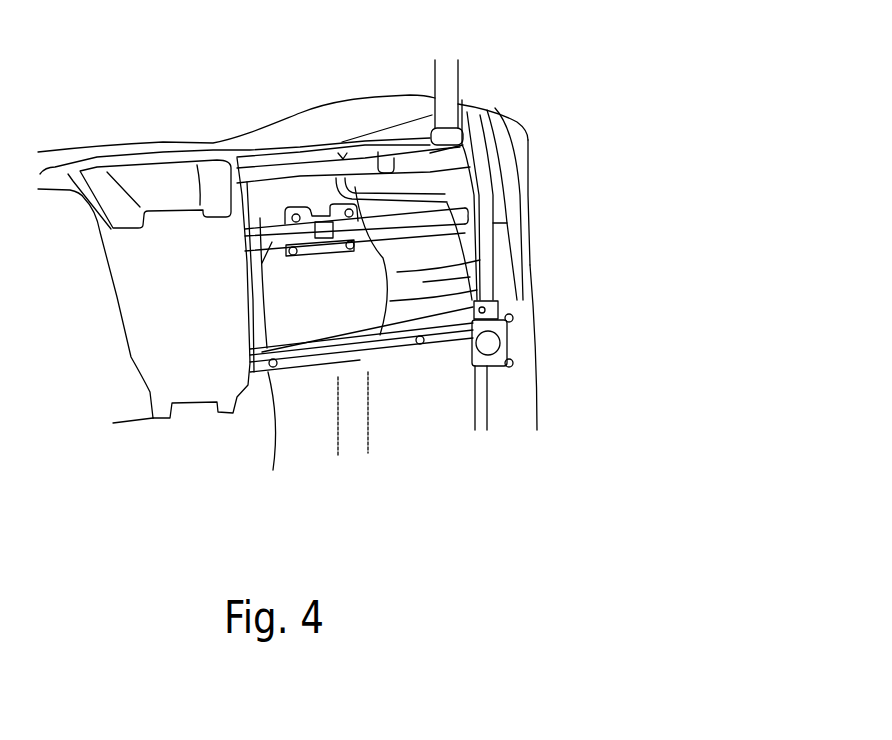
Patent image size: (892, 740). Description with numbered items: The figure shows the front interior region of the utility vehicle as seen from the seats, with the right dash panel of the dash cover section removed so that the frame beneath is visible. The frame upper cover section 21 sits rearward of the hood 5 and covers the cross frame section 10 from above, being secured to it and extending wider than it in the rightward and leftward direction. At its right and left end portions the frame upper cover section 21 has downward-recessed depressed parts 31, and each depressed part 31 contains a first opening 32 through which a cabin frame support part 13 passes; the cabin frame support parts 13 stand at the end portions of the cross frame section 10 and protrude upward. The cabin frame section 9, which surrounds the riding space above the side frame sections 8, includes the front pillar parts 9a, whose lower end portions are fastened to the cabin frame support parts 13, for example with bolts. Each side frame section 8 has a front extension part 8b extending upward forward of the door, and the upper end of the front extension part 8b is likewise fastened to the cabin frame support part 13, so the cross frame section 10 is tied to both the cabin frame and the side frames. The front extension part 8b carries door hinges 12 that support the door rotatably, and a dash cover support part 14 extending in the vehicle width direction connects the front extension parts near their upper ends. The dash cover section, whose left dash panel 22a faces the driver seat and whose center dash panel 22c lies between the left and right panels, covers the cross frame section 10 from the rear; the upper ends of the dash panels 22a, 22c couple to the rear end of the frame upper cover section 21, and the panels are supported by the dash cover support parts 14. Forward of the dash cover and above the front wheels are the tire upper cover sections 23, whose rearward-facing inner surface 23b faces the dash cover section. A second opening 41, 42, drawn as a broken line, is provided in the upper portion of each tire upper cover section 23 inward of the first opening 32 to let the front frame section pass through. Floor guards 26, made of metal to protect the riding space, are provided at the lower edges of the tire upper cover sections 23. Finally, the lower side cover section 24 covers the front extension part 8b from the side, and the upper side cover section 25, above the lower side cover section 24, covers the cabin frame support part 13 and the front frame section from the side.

The hood 5 is at (115, 140).
The frame upper cover section 21 is at (252, 157).
The cross frame section 10 is at (302, 157).
The second opening 41 is at (345, 137).
The depressed part 31 is at (405, 140).
The first opening 32 is at (425, 140).
The cabin frame section 9 is at (460, 70).
The front pillar part 9a is at (461, 80).
The cabin frame support part 13 is at (450, 141).
The upper side cover section 25 is at (530, 155).
The second opening 42 is at (450, 198).
The tire upper cover section 23 is at (517, 253).
The inner surface 23b is at (440, 285).
The door hinge 12 is at (503, 333).
The lower side cover section 24 is at (537, 347).
The side frame section 8 is at (480, 390).
The front extension part 8b is at (486, 410).
The left dash panel 22a is at (127, 407).
The center dash panel 22c is at (192, 375).
The dash cover support part 14 is at (303, 360).
The floor guard 26 is at (422, 407).